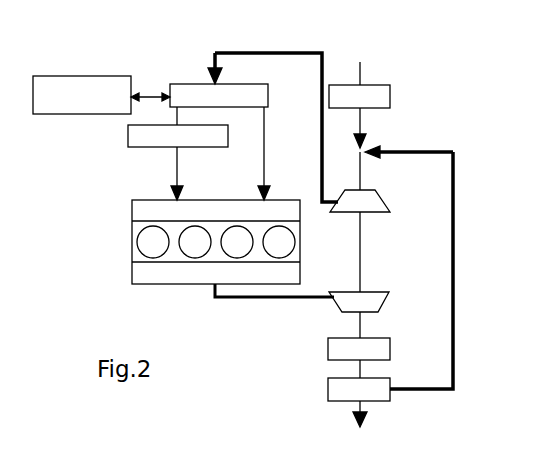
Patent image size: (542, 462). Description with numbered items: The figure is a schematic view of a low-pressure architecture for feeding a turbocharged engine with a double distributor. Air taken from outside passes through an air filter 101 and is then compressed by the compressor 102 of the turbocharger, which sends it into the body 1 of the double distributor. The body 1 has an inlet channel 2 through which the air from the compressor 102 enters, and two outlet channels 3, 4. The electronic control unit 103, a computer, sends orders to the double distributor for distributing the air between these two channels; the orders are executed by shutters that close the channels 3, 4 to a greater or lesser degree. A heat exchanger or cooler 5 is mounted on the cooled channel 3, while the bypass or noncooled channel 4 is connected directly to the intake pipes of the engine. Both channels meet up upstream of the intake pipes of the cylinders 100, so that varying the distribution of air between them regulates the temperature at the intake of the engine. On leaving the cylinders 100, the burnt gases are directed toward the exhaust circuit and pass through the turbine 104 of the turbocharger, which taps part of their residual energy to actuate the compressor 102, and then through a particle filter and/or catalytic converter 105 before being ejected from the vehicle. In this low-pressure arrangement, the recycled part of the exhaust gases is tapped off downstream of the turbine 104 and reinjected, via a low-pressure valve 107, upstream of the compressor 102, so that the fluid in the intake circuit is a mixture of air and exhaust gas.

The body of the double distributor 1 is at (268, 91).
The inlet channel 2 is at (214, 60).
The cooled channel 3 is at (168, 112).
The bypass channel 4 is at (264, 135).
The cooler 5 is at (128, 136).
The cylinders 100 is at (132, 243).
The air filter 101 is at (390, 95).
The compressor 102 is at (386, 200).
The electronic control unit 103 is at (66, 76).
The turbine 104 is at (386, 300).
The particle filter and/or catalytic converter 105 is at (328, 345).
The low-pressure valve 107 is at (328, 385).